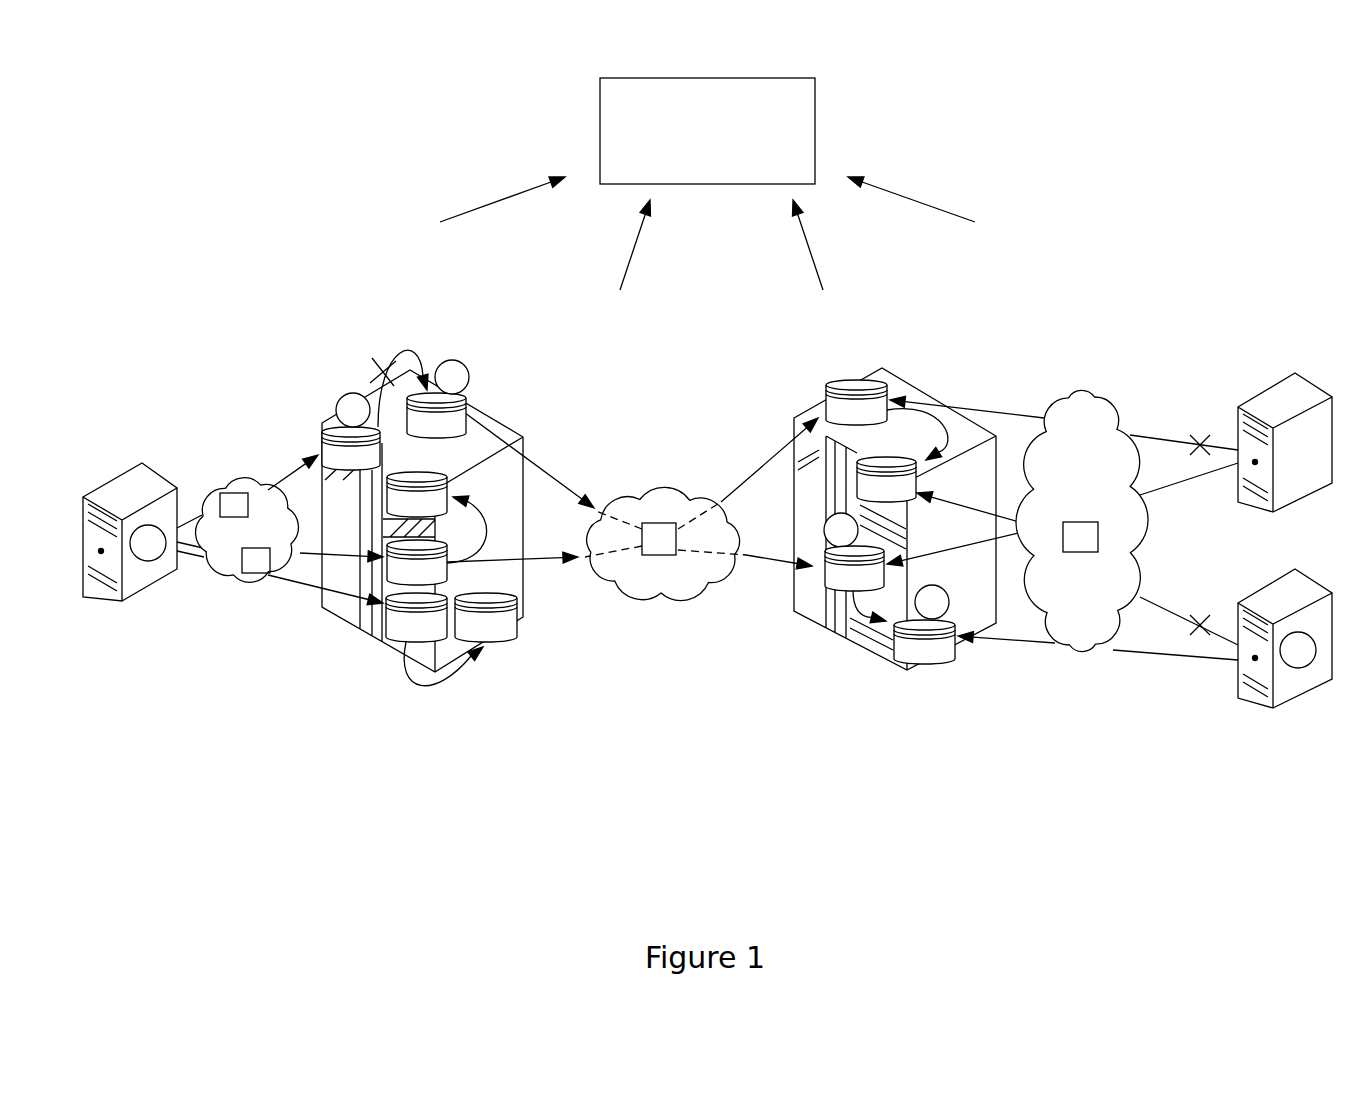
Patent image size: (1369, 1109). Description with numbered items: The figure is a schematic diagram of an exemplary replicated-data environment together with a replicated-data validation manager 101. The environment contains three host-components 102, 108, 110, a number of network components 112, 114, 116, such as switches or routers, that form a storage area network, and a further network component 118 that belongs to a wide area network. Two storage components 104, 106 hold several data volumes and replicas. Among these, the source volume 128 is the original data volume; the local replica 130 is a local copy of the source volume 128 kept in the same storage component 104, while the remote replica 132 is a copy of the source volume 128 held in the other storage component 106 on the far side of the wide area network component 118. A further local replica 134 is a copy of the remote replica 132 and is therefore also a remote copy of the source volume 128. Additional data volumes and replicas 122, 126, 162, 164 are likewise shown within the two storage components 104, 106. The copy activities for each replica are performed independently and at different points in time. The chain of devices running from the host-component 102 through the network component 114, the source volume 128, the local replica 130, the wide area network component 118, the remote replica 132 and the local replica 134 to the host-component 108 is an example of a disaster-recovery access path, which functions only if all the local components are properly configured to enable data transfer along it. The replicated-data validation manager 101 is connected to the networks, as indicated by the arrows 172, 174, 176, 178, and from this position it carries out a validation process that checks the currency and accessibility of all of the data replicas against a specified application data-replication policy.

The replicated-data validation manager 101 is at (600, 107).
The host-component 102 is at (116, 476).
The storage component 104 is at (425, 525).
The storage component 106 is at (890, 526).
The host-component 108 is at (1265, 595).
The host-component 110 is at (1265, 398).
The network component 112 is at (253, 574).
The network component 114 is at (254, 526).
The network component 116 is at (1090, 522).
The network component 118 is at (658, 523).
The production volume 065 122 is at (405, 655).
The BCV volume 126 is at (512, 640).
The source volume 128 is at (323, 422).
The local replica 130 is at (408, 342).
The remote replica 132 is at (824, 582).
The local replica of remote replica 134 is at (951, 662).
The R2 volume 162 is at (835, 383).
The BCV volume 164 is at (916, 455).
The arrow 172 is at (492, 199).
The arrow 174 is at (609, 245).
The arrow 176 is at (833, 245).
The arrow 178 is at (920, 199).